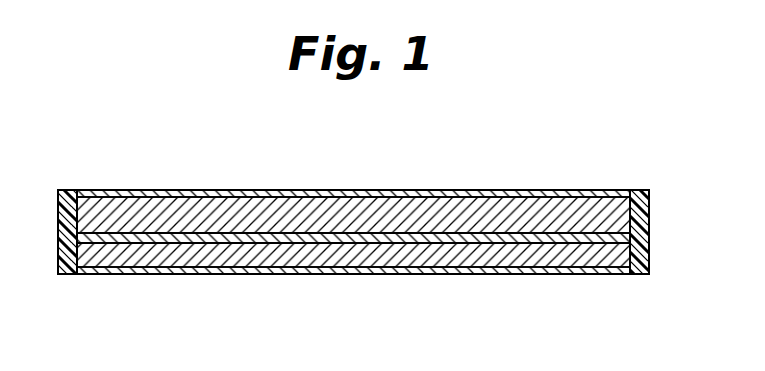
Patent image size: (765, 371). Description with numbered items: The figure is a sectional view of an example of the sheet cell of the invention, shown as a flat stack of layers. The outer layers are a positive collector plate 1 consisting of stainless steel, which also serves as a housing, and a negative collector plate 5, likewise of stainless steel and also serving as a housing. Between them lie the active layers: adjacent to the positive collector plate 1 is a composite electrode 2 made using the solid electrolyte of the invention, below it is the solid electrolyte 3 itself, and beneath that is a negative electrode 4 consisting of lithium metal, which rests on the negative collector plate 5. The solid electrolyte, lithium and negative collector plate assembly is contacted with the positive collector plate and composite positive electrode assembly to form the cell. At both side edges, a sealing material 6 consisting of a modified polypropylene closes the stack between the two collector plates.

The positive collector plate 1 is at (353, 190).
The composite electrode 2 is at (273, 190).
The solid electrolyte 3 is at (488, 233).
The negative electrode 4 is at (457, 262).
The negative collector plate 5 is at (362, 272).
The sealing material 6 is at (652, 226).